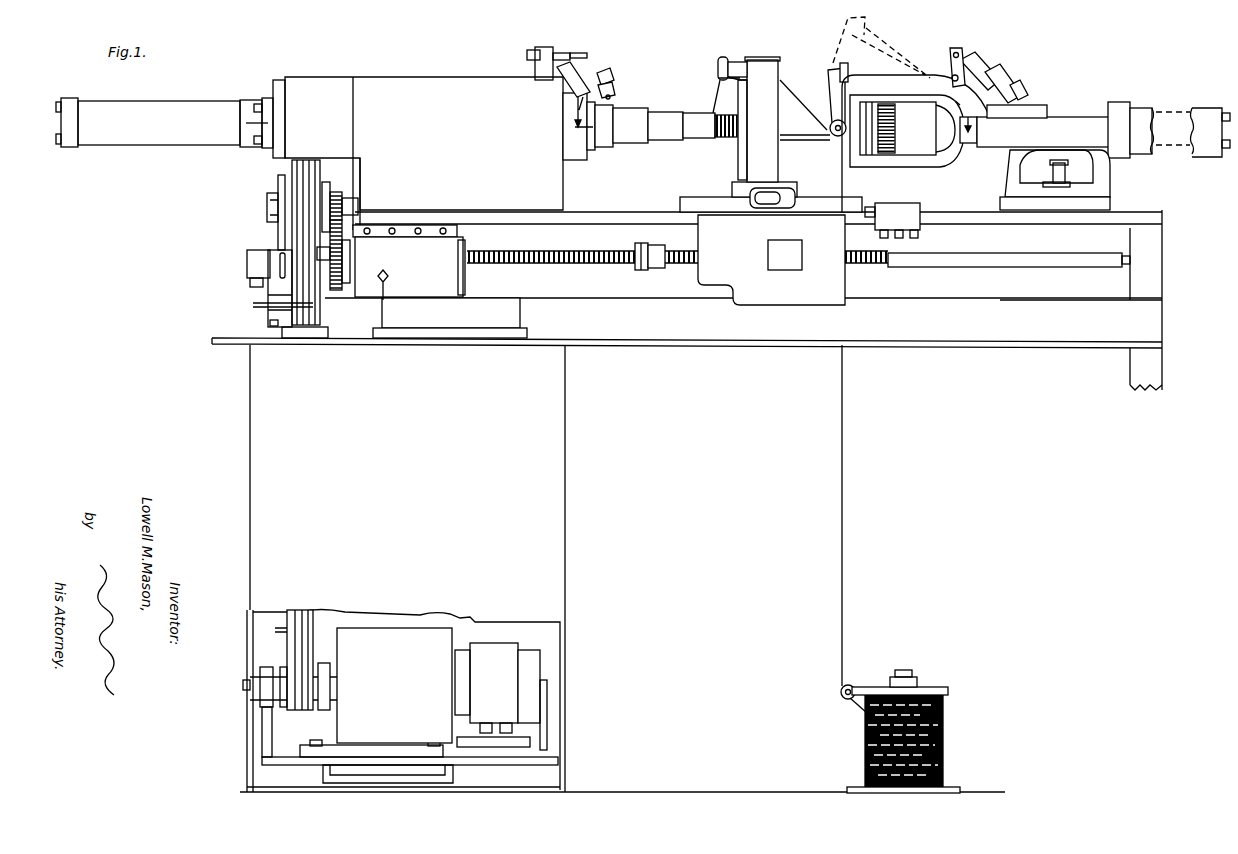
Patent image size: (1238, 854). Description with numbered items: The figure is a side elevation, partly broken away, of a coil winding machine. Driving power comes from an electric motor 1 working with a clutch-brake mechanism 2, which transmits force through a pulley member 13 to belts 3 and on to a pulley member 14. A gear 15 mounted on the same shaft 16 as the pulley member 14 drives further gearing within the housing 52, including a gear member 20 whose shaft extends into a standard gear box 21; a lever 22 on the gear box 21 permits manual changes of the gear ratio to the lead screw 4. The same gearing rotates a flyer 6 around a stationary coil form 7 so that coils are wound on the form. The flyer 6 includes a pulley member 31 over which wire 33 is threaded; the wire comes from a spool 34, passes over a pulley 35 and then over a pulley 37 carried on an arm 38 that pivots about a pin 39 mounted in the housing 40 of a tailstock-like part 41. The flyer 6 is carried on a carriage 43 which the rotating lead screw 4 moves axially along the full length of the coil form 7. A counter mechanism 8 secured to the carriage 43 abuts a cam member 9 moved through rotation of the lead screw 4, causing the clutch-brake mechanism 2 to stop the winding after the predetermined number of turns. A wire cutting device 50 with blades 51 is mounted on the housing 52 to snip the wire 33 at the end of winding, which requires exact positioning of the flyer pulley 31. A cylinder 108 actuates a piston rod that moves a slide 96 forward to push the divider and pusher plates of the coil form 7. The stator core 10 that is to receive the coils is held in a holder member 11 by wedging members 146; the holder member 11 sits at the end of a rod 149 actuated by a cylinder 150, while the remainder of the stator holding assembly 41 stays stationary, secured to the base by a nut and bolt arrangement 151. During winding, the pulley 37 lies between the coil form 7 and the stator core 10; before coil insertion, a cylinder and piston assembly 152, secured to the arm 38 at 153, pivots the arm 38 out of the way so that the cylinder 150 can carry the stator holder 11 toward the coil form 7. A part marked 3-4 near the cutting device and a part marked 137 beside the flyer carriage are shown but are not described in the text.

The motor 1 is at (532, 652).
The clutch-brake mechanism 2 is at (394, 685).
The belts 3 is at (268, 123).
The switch contacts 3-4 is at (572, 75).
The lead screw 4 is at (519, 265).
The flyer 6 is at (735, 62).
The coil form 7 is at (662, 108).
The counter mechanism 8 is at (846, 285).
The cam member 9 is at (660, 250).
The stator core 10 is at (890, 155).
The holding member 11 is at (936, 160).
The pulley member 13 is at (784, 43).
The pulley member 14 is at (292, 164).
The gear 15 is at (338, 190).
The shaft 16 is at (267, 207).
The gear member 20 is at (338, 291).
The gear box 21 is at (437, 297).
The lever 22 is at (389, 272).
The pulley member 31 is at (718, 68).
The wire 33 is at (716, 97).
The spool 34 is at (945, 735).
The pulley 35 is at (852, 686).
The pulley 37 is at (830, 110).
The arm 38 is at (900, 70).
The pin 39 is at (1000, 48).
The housing 40 is at (1028, 90).
The tailstock-like part 41 is at (1112, 186).
The carriage 43 is at (690, 197).
The wire cutting device 50 is at (612, 76).
The blades 51 is at (615, 93).
The housing 52 is at (455, 76).
The slide 96 is at (848, 68).
The cylinder 108 is at (148, 122).
The tool post 137 is at (765, 150).
The wedging members 146 is at (872, 153).
The rod 149 is at (968, 145).
The cylinder 150 is at (1196, 108).
The nut and bolt arrangement 151 is at (1052, 170).
The cylinder and piston assembly 152 is at (1010, 78).
The attachment point 153 is at (957, 48).